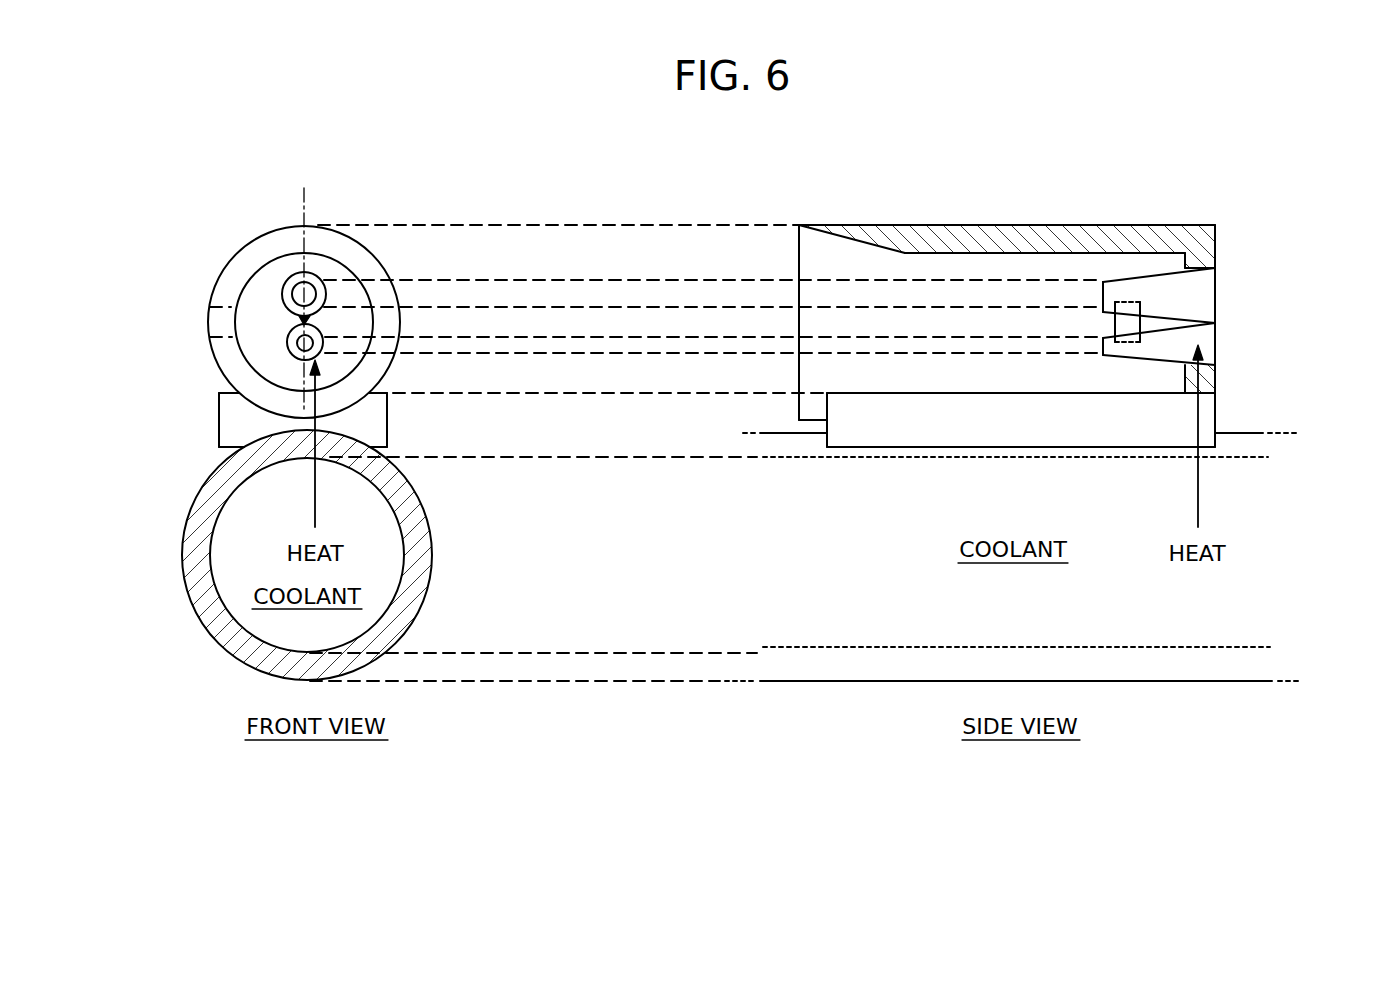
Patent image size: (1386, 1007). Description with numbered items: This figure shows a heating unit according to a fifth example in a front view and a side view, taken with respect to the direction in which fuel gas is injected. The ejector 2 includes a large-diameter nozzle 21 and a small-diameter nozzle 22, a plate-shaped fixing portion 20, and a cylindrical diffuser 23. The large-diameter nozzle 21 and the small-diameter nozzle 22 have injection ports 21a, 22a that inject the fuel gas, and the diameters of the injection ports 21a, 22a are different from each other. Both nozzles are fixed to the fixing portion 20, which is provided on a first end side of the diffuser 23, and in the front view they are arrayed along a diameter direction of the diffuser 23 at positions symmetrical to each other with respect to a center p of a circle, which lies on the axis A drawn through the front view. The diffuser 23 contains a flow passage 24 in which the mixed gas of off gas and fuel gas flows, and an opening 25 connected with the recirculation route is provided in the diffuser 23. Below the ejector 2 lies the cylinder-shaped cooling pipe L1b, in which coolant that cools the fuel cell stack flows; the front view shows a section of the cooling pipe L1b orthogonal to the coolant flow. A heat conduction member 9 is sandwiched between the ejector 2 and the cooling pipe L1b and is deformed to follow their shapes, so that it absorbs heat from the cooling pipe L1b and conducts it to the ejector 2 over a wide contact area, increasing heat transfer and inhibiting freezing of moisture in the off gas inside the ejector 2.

The ejector 2 is at (405, 243).
The heat conduction member 9 is at (387, 406).
The fixing portion 20 is at (1195, 225).
The large-diameter nozzle 21 is at (313, 274).
The injection port 21a is at (1103, 282).
The small-diameter nozzle 22 is at (303, 321).
The injection port 22a is at (1103, 355).
The diffuser 23 is at (318, 225).
The flow passage 24 is at (243, 336).
The opening 25 is at (218, 307).
The center of a circle p is at (303, 321).
The cooling pipe L1b is at (422, 503).
The axis A is at (303, 284).